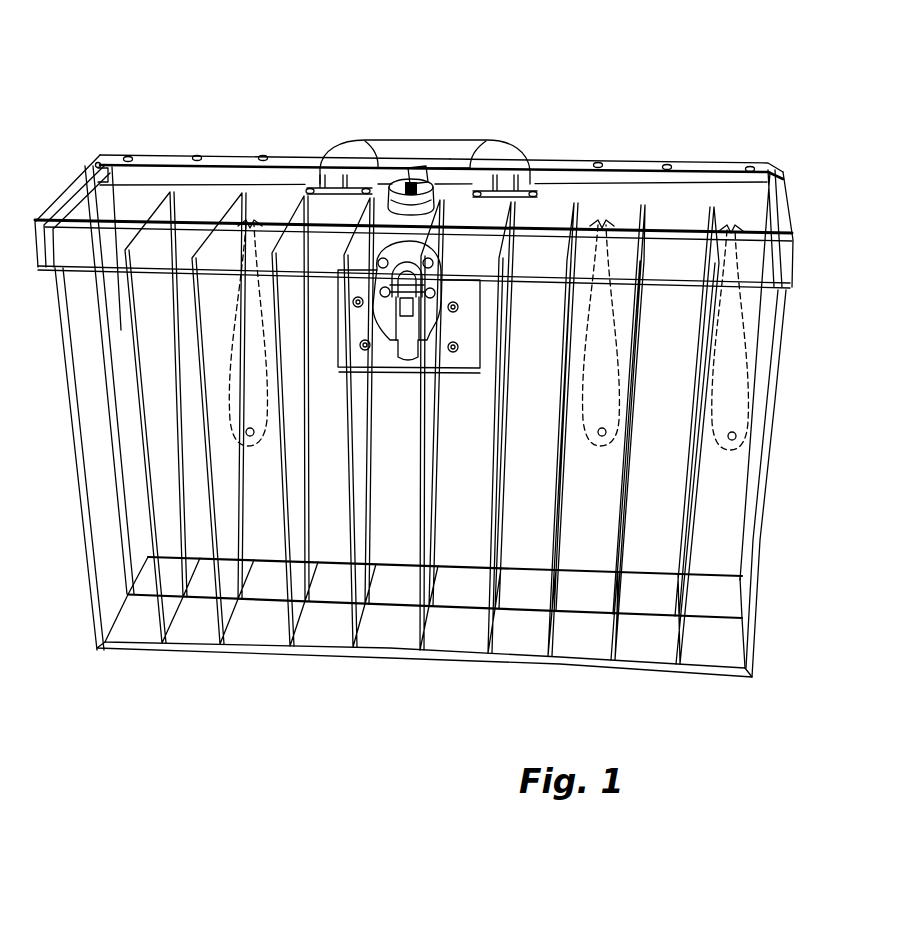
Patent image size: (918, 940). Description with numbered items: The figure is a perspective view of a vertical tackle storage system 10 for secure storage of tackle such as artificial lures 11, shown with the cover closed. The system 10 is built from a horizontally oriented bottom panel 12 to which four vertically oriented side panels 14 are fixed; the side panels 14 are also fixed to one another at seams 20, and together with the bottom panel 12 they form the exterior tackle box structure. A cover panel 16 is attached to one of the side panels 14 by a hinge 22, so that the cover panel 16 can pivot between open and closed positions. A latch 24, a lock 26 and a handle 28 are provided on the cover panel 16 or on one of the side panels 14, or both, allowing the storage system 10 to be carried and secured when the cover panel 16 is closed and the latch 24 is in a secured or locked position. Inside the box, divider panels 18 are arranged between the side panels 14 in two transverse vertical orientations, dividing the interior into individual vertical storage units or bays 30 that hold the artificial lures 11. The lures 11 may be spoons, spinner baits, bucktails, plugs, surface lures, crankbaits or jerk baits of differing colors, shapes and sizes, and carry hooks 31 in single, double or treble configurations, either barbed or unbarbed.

The system 10 is at (108, 96).
The artificial lures 11 is at (760, 320).
The bottom panel 12 is at (452, 631).
The side panels 14 is at (83, 515).
The cover panel 16 is at (683, 195).
The divider panels 18 is at (150, 195).
The seams 20 is at (745, 690).
The hinge 22 is at (221, 162).
The latch 24 is at (397, 250).
The lock 26 is at (427, 187).
The handle 28 is at (397, 148).
The bays 30 is at (408, 468).
The hooks 31 is at (603, 220).